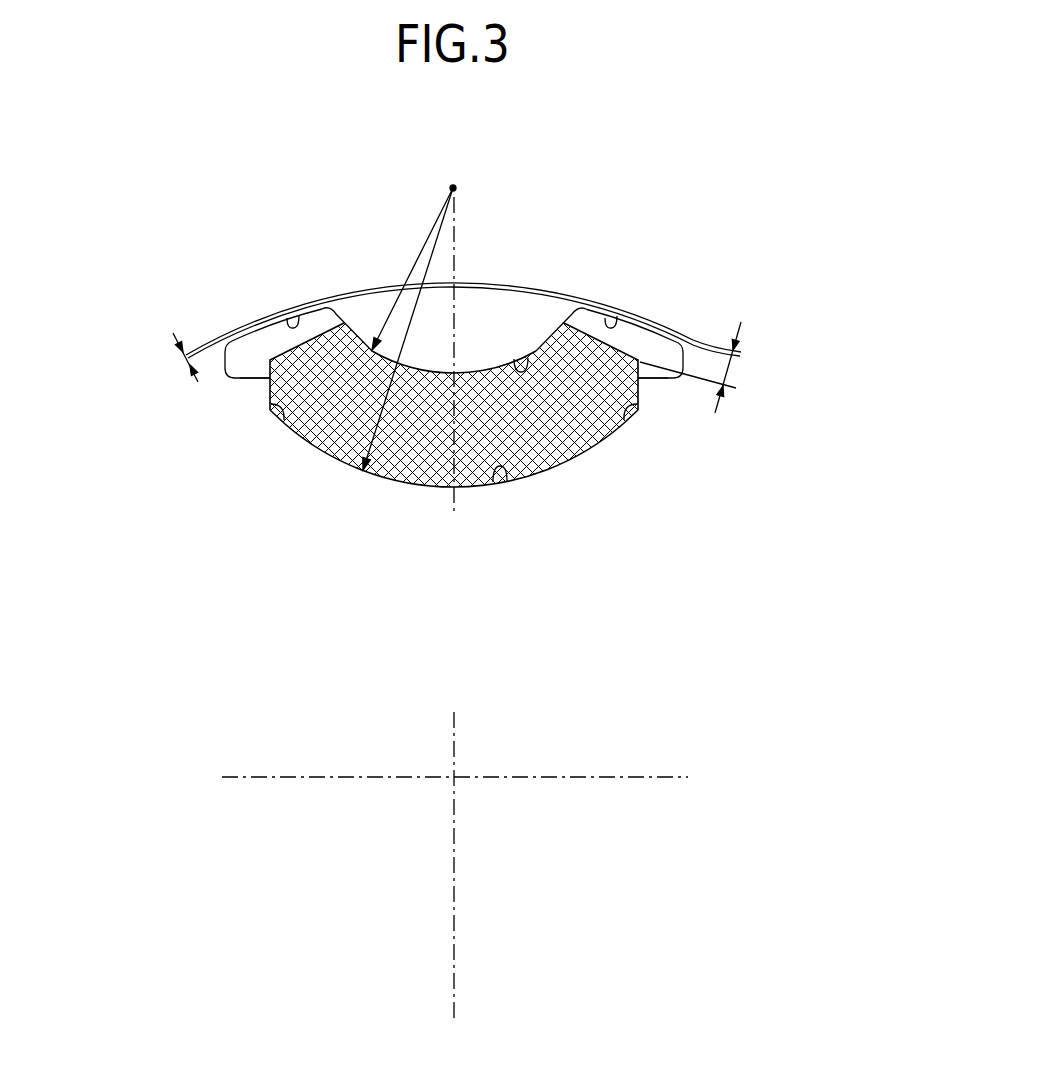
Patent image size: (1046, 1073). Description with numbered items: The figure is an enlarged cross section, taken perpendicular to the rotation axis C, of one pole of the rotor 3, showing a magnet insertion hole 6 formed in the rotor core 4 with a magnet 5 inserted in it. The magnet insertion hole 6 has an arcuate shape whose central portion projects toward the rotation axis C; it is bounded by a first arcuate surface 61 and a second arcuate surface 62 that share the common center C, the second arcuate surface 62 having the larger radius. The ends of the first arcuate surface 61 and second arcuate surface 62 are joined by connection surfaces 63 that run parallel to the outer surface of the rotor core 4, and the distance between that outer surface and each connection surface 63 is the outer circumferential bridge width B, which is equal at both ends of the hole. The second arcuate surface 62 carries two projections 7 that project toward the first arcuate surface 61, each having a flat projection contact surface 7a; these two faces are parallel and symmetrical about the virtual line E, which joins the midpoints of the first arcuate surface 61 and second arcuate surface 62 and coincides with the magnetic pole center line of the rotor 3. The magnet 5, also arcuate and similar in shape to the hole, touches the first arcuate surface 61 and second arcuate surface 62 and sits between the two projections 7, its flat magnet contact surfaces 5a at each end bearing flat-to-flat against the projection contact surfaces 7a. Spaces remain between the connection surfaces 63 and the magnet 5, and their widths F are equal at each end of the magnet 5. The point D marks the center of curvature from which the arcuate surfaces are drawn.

The rotor 3 is at (616, 157).
The rotor core 4 is at (371, 305).
The magnet 5 is at (572, 445).
The magnet contact surface 5a is at (257, 387).
The magnet insertion hole 6 is at (633, 333).
The first arcuate surface 61 is at (527, 357).
The second arcuate surface 62 is at (499, 483).
The connection surface 63 is at (291, 315).
The projection 7 is at (253, 372).
The projection contact surface 7a is at (283, 423).
The outer circumferential bridge width B is at (178, 357).
The rotation axis C is at (456, 779).
The center of curvature D is at (461, 187).
The virtual line E is at (458, 218).
The width of space F is at (728, 369).